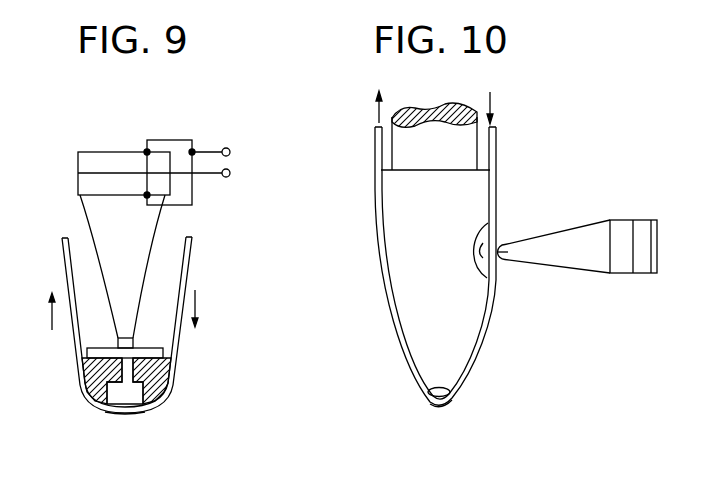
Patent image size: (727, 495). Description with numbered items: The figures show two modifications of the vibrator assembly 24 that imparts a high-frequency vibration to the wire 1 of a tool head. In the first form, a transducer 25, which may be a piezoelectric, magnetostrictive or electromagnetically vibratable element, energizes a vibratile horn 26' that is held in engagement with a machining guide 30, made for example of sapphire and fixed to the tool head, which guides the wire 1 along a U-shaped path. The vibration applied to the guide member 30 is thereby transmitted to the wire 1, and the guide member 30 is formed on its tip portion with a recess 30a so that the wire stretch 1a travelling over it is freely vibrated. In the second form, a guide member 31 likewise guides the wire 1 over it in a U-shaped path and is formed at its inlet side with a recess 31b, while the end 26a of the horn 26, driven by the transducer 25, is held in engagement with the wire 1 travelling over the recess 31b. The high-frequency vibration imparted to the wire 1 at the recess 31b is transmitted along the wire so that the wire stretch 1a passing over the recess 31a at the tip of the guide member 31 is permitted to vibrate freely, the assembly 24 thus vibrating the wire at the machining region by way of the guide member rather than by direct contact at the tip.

In FIG. 9, the wire 1 is at (62, 248).
In FIG. 10, the wire 1 is at (497, 185).
In FIG. 9, the wire stretch 1a is at (127, 413).
In FIG. 10, the wire stretch 1a is at (440, 405).
In FIG. 9, the vibrator assembly 24 is at (247, 334).
In FIG. 10, the vibrator assembly 24 is at (617, 136).
In FIG. 9, the transducer 25 is at (91, 155).
In FIG. 10, the transducer 25 is at (619, 273).
In FIG. 10, the horn 26 is at (560, 224).
In FIG. 9, the horn 26' is at (159, 276).
In FIG. 10, the end of the horn 26a is at (505, 250).
In FIG. 9, the machining guide 30 is at (82, 385).
In FIG. 9, the recess 30a is at (137, 395).
In FIG. 10, the guide member 31 is at (405, 340).
In FIG. 10, the recess 31a is at (450, 386).
In FIG. 10, the recess 31b is at (485, 260).